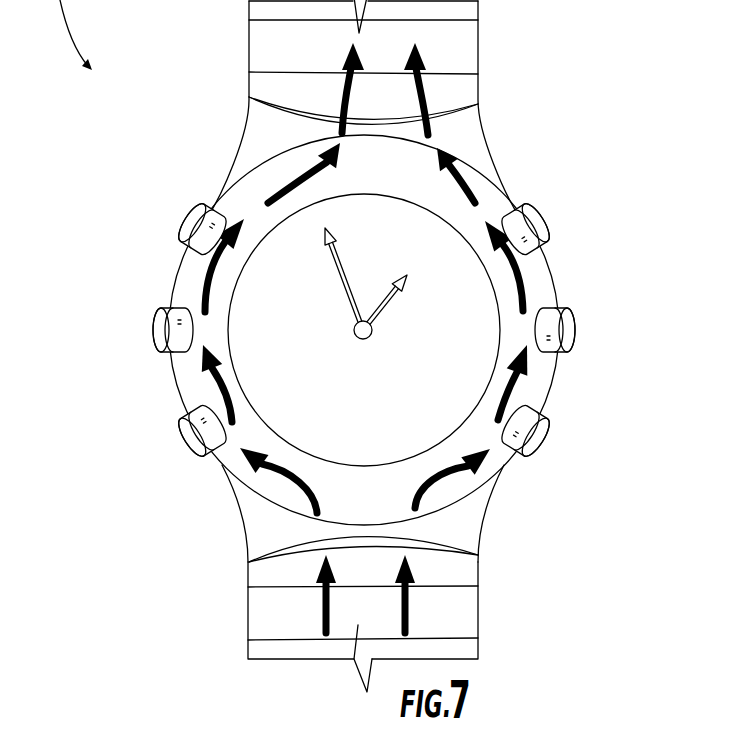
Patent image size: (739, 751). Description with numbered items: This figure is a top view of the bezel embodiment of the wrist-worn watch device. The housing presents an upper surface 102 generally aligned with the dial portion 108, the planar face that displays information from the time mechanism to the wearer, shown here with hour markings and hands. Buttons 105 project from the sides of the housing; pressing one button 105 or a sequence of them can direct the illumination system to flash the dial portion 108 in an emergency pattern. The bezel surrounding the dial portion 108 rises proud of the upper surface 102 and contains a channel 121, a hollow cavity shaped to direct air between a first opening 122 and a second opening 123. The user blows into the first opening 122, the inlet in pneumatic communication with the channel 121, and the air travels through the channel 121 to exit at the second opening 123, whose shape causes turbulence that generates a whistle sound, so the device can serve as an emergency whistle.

The upper surface 102 is at (533, 260).
The button 105 is at (157, 328).
The dial portion 108 is at (450, 360).
The channel 121 is at (228, 452).
The first opening 122 is at (305, 545).
The second opening 123 is at (405, 137).